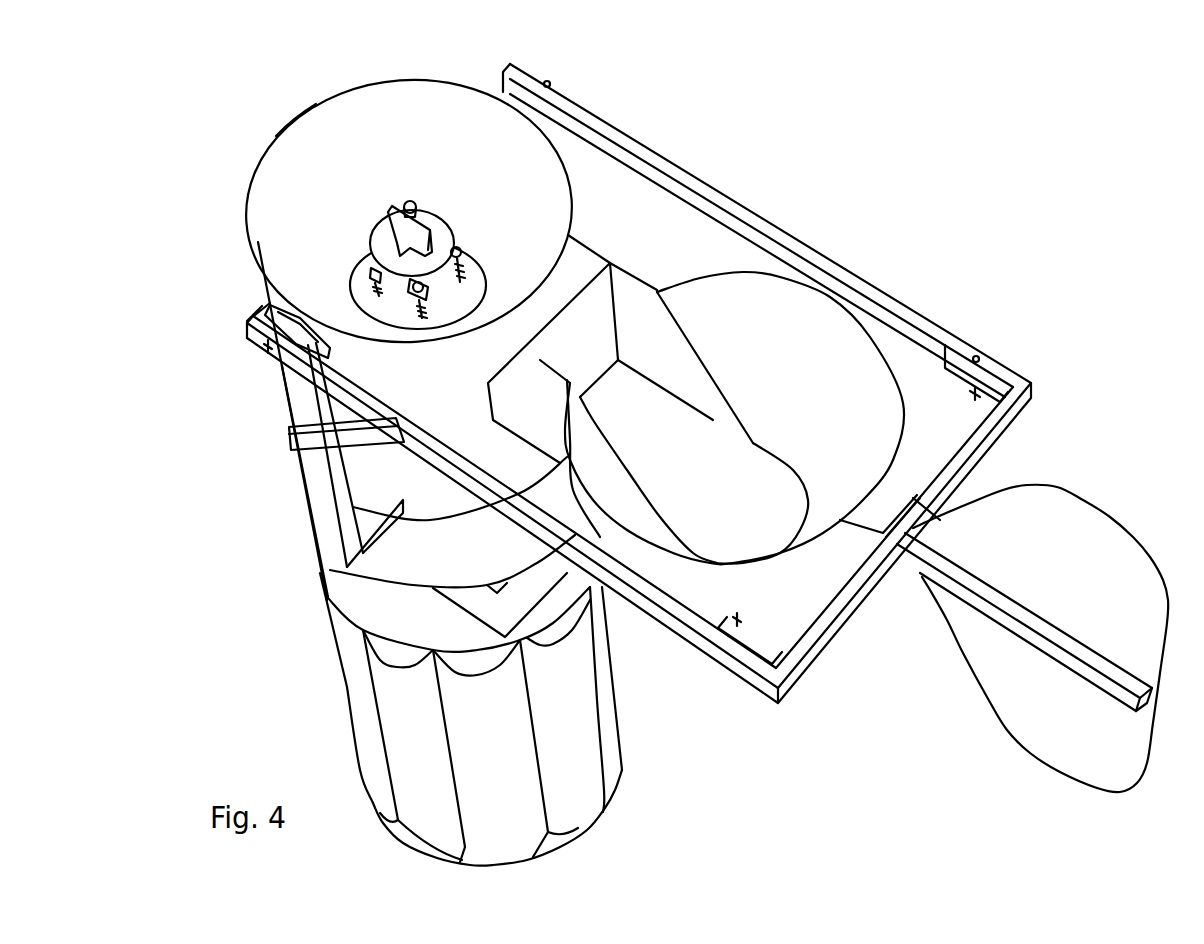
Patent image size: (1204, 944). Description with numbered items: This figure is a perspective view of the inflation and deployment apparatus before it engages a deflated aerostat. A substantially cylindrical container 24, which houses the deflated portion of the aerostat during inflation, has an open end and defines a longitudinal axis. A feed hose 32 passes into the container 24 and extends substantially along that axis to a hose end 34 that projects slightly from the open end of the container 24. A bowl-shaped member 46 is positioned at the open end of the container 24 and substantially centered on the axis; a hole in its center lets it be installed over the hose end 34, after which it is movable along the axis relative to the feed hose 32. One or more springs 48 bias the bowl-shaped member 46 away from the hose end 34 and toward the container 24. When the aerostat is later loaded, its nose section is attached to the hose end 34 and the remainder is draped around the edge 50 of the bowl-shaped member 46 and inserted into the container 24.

The cylindrical container 24 is at (257, 292).
The feed hose 32 is at (413, 205).
The hose end 34 is at (410, 205).
The bowl-shaped member 46 is at (273, 192).
The springs 48 is at (470, 258).
The edge 50 is at (292, 120).